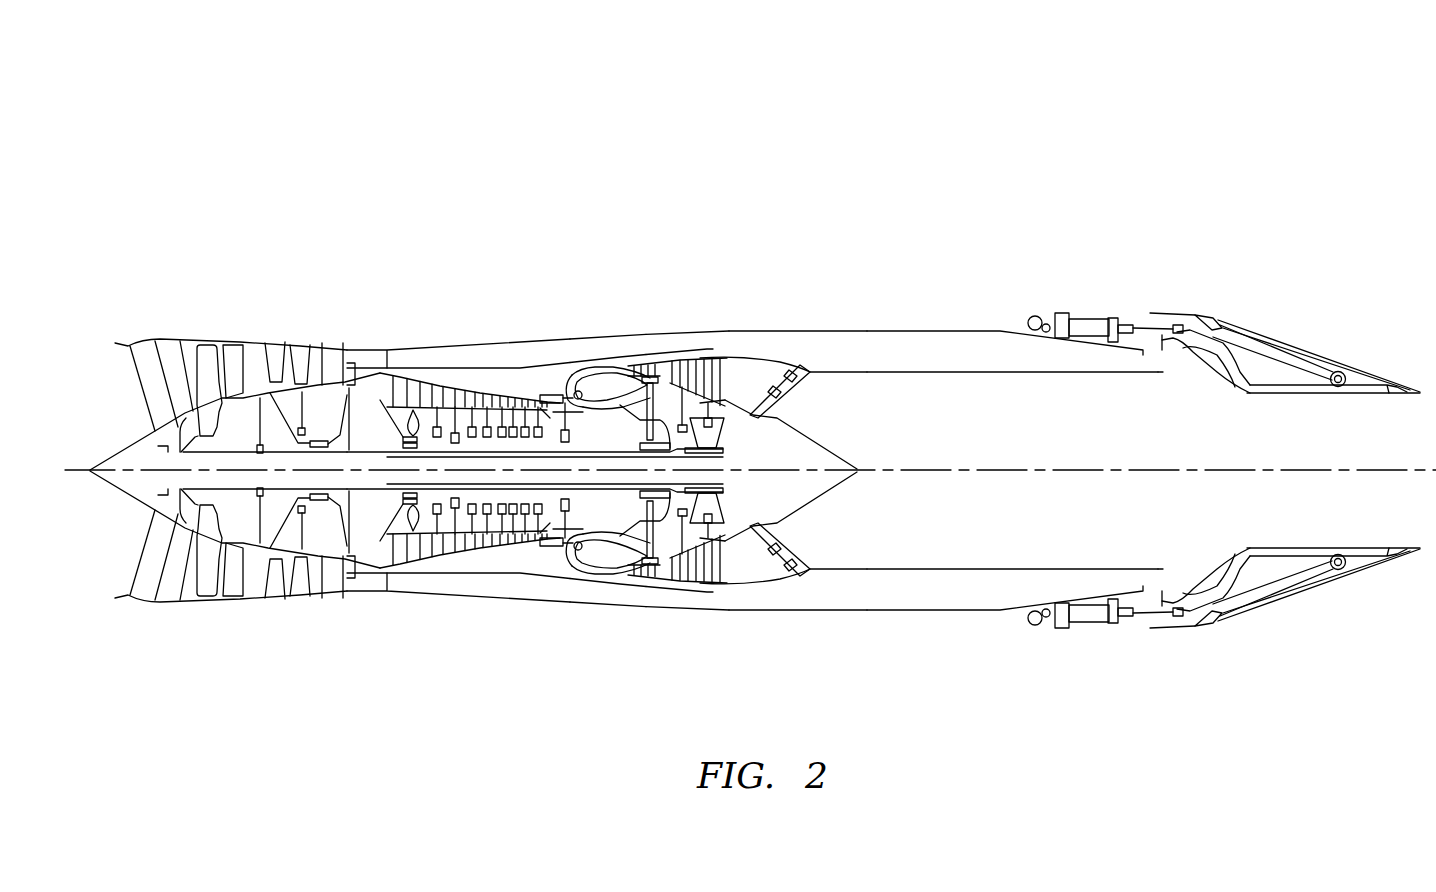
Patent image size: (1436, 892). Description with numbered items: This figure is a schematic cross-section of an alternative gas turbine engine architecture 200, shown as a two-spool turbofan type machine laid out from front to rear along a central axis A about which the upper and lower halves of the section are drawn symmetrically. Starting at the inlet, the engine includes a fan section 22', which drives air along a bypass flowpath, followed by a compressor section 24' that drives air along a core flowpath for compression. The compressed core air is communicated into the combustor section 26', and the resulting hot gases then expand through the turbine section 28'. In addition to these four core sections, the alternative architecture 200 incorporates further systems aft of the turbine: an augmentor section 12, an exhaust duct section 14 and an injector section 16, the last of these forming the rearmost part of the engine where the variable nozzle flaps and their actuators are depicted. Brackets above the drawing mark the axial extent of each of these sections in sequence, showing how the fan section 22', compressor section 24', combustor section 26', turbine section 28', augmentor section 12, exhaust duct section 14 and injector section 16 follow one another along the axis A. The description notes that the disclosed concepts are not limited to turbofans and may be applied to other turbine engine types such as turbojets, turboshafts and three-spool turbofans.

The alternative engine architecture 200 is at (1067, 154).
The fan section 22' is at (235, 403).
The compressor section 24' is at (532, 403).
The combustor section 26' is at (595, 405).
The turbine section 28' is at (674, 407).
The augmentor section 12 is at (867, 263).
The exhaust duct section 14 is at (1158, 263).
The injector section 16 is at (1420, 263).
The central longitudinal engine axis A is at (1238, 471).